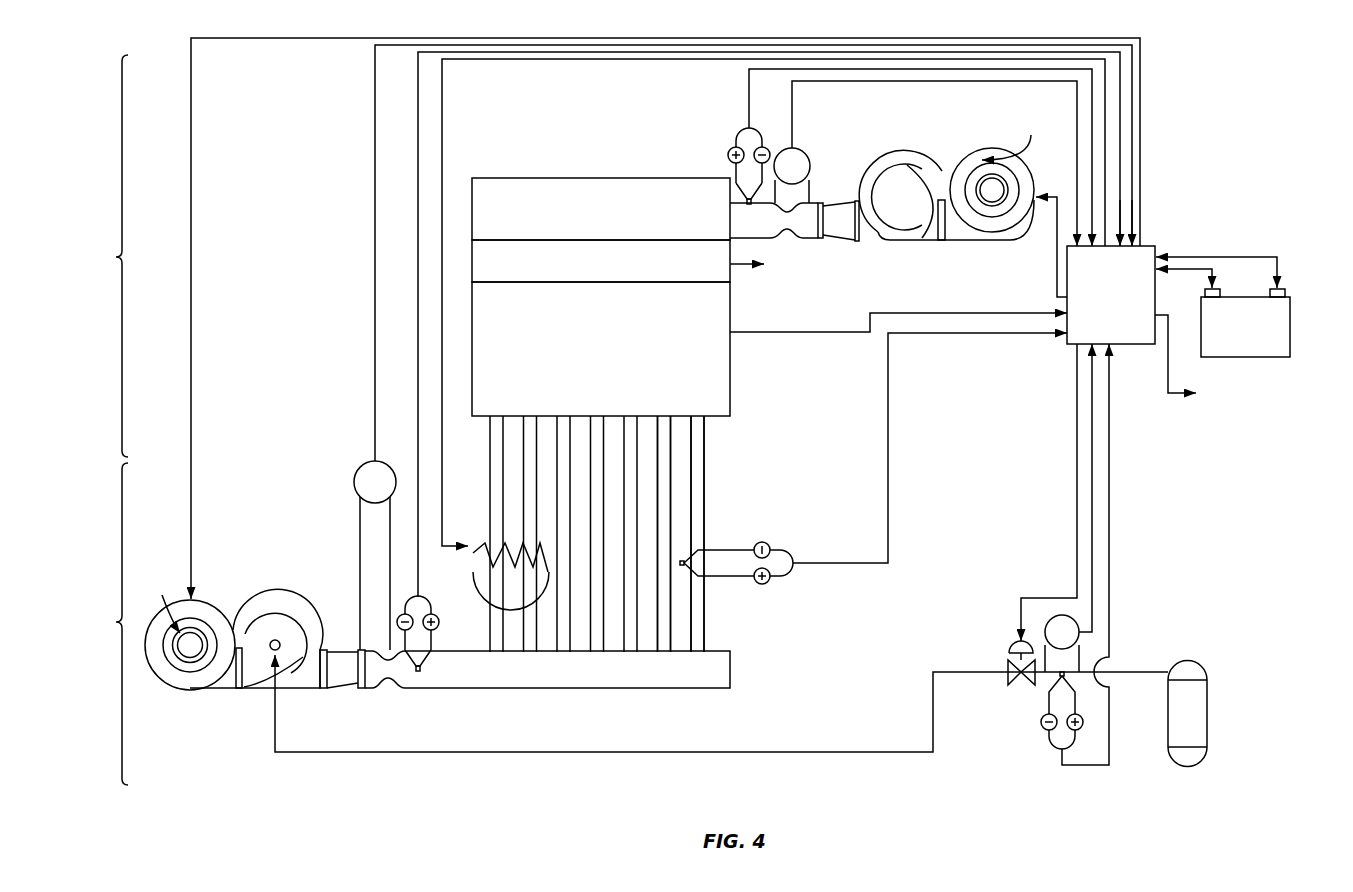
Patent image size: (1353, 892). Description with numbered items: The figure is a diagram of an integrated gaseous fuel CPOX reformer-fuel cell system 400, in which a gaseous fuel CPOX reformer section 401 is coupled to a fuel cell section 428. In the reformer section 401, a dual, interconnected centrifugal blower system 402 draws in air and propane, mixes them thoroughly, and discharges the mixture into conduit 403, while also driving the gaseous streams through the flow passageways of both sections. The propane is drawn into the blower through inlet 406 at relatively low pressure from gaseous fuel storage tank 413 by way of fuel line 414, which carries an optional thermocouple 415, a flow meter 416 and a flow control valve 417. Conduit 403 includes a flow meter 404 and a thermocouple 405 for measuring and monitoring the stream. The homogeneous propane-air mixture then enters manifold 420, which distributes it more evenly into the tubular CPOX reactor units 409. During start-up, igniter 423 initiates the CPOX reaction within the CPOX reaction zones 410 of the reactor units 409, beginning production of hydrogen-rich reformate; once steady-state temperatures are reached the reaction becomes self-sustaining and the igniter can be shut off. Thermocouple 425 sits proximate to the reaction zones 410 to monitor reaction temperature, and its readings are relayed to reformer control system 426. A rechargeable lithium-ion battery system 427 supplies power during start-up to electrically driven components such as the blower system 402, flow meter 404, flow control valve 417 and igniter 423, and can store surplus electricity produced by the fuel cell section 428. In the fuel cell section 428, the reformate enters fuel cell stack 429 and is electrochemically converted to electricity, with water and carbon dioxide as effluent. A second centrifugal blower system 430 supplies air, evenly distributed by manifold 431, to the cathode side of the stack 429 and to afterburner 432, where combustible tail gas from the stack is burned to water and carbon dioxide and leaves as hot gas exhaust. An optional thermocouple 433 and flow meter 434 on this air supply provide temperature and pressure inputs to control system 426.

The integrated gaseous fuel CPOX reformer-fuel cell system 400 is at (1214, 94).
The gaseous fuel CPOX reformer section 401 is at (104, 624).
The centrifugal blower system 402 is at (207, 690).
The conduit 403 is at (403, 688).
The flow meter 404 is at (372, 460).
The thermocouple 405 is at (433, 645).
The inlet 406 is at (283, 640).
The tubular CPOX reactor units 409 is at (672, 534).
The CPOX reaction zones 410 is at (670, 477).
The gaseous fuel storage tank 413 is at (1208, 705).
The fuel line 414 is at (497, 752).
The thermocouple 415 is at (1045, 738).
The flow meter 416 is at (1058, 616).
The flow control valve 417 is at (1018, 688).
The manifold 420 is at (585, 688).
The igniter 423 is at (472, 548).
The thermocouple 425 is at (720, 578).
The reformer control system 426 is at (1147, 246).
The rechargeable lithium-ion battery system 427 is at (1287, 296).
The fuel cell section 428 is at (104, 256).
The fuel cell stack 429 is at (732, 393).
The centrifugal blower system 430 is at (977, 242).
The manifold 431 is at (652, 178).
The afterburner 432 is at (526, 240).
The thermocouple 433 is at (737, 145).
The flow meter 434 is at (800, 150).